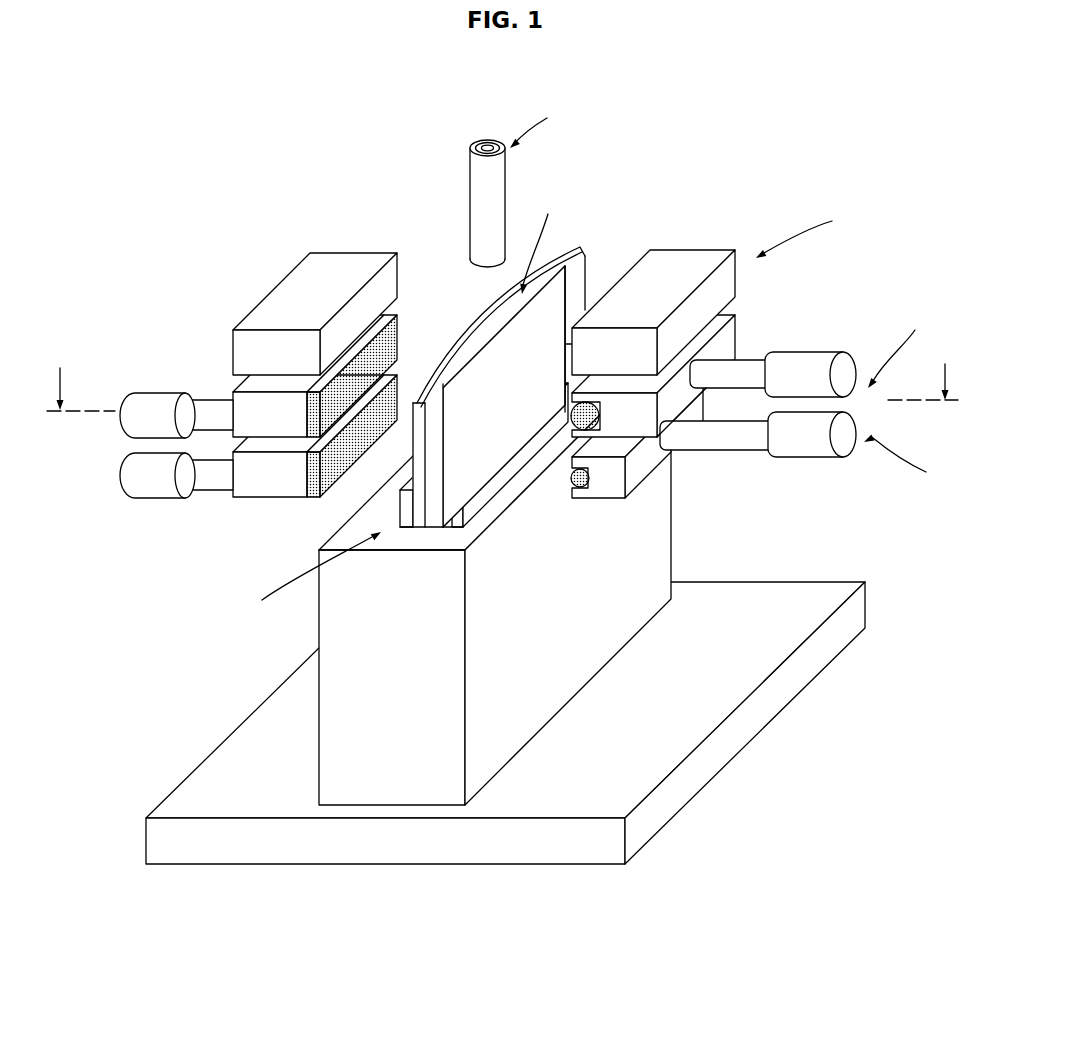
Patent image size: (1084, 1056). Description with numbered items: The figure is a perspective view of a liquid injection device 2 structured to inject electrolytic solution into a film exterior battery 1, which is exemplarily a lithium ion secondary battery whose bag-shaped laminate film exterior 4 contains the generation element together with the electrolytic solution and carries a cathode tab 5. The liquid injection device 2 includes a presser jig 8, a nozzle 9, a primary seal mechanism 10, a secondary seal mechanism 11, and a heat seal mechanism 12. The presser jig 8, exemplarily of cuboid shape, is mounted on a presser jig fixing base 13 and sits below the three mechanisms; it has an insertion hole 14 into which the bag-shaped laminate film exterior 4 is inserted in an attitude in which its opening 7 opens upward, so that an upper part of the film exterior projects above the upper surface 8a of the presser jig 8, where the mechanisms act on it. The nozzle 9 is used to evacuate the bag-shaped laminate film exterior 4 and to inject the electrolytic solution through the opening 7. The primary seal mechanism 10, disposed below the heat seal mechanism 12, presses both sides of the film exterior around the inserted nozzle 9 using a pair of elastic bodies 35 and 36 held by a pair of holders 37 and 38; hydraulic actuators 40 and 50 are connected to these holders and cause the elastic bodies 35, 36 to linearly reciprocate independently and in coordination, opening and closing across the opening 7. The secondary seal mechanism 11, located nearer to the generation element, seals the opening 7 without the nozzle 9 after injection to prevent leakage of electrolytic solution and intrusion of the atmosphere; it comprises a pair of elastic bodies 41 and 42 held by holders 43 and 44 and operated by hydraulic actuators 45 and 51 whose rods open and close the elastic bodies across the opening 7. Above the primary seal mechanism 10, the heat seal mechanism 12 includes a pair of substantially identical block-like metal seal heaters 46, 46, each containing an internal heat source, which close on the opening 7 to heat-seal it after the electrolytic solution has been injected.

The liquid injection device 2 is at (148, 137).
The film exterior battery 1 is at (504, 396).
The bag-shaped laminate film exterior 4 is at (573, 268).
The cathode tab 5 is at (415, 502).
The opening 7 is at (501, 297).
The presser jig 8 is at (340, 640).
The upper surface 8a is at (366, 528).
The nozzle 9 is at (522, 170).
The primary seal mechanism 10 is at (815, 349).
The secondary seal mechanism 11 is at (807, 459).
The heat seal mechanism 12 is at (732, 383).
The presser jig fixing base 13 is at (820, 600).
The insertion hole 14 is at (308, 577).
The elastic body 35 is at (574, 424).
The elastic body 36 is at (392, 340).
The holder 37 is at (672, 414).
The holder 38 is at (246, 412).
The hydraulic actuator 40 is at (822, 365).
The elastic body 41 is at (574, 502).
The elastic body 42 is at (392, 408).
The holder 43 is at (645, 489).
The holder 44 is at (252, 492).
The hydraulic actuator 45 is at (798, 440).
The seal heater 46 is at (300, 282).
The hydraulic actuator 50 is at (163, 403).
The hydraulic actuator 51 is at (153, 488).